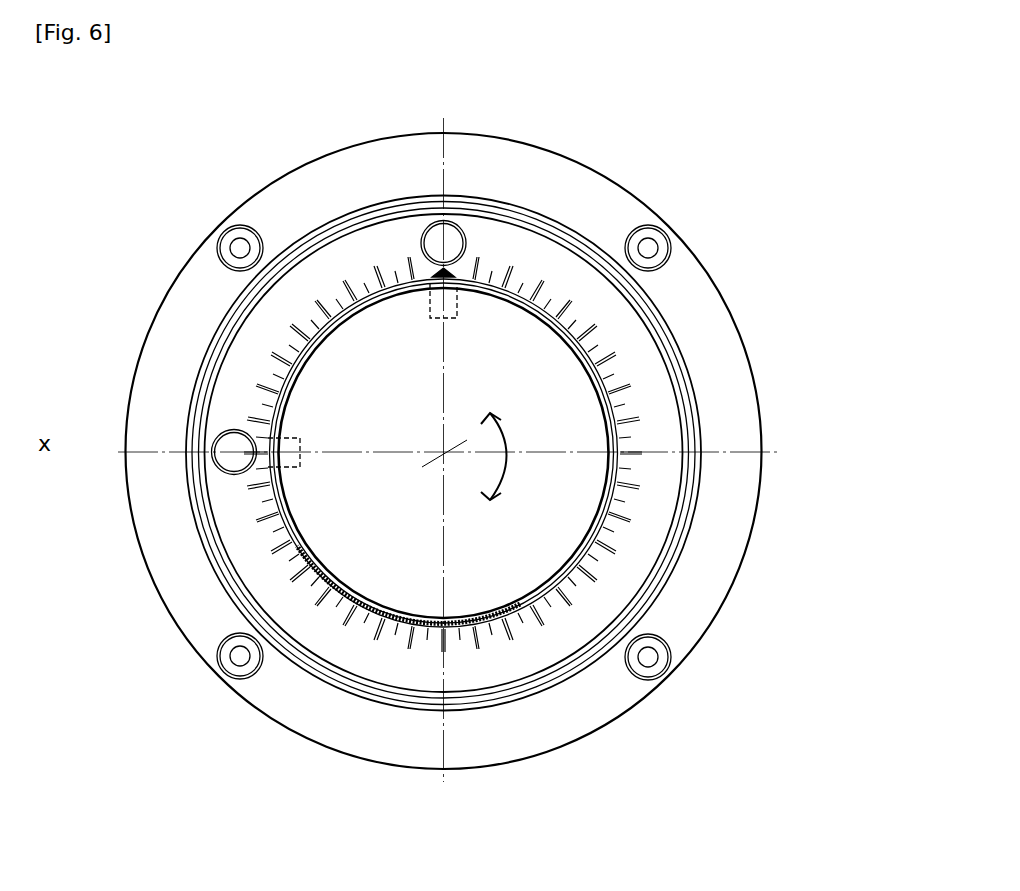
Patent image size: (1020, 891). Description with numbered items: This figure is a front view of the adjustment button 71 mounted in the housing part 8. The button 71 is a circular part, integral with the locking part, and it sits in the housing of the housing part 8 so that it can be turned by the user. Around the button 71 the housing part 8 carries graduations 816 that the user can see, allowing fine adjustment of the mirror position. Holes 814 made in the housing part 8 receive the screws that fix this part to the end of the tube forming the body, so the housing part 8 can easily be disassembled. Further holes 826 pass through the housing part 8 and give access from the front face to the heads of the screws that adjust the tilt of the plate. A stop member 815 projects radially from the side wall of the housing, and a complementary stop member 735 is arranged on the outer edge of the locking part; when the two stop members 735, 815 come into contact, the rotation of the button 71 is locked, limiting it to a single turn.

The housing part 8 is at (568, 180).
The adjustment button 71 is at (572, 503).
The graduations 816 is at (637, 413).
The holes 826 is at (433, 236).
The holes 814 is at (238, 244).
The stop member 815 is at (297, 443).
The complementary stop member 735 is at (458, 312).